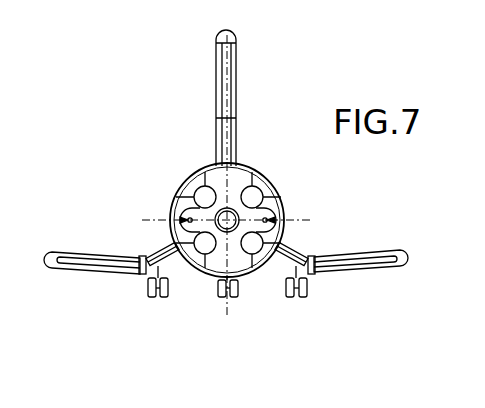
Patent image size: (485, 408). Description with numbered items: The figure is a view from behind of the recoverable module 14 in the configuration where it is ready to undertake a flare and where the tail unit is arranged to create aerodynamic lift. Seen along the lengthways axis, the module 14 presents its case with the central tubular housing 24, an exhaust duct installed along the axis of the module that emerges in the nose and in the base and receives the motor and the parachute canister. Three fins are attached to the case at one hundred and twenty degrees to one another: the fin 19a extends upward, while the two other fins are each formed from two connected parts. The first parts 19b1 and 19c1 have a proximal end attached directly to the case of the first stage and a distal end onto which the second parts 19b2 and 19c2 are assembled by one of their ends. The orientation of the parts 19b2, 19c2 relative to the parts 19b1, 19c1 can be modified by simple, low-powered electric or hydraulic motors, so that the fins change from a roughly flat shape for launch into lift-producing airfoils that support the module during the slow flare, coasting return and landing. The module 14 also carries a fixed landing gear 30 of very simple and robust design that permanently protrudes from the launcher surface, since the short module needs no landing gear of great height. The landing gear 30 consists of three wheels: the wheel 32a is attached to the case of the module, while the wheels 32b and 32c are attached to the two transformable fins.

The recoverable module 14 is at (152, 80).
The fin 19a is at (226, 88).
The first part of fin 19b1 is at (152, 258).
The second part of fin 19b2 is at (83, 270).
The first part of fin 19c1 is at (304, 258).
The second part of fin 19c2 is at (360, 270).
The tubular housing 24 is at (222, 208).
The landing gear 30 is at (214, 331).
The wheel 32a is at (202, 302).
The wheel 32b is at (157, 298).
The wheel 32c is at (297, 298).